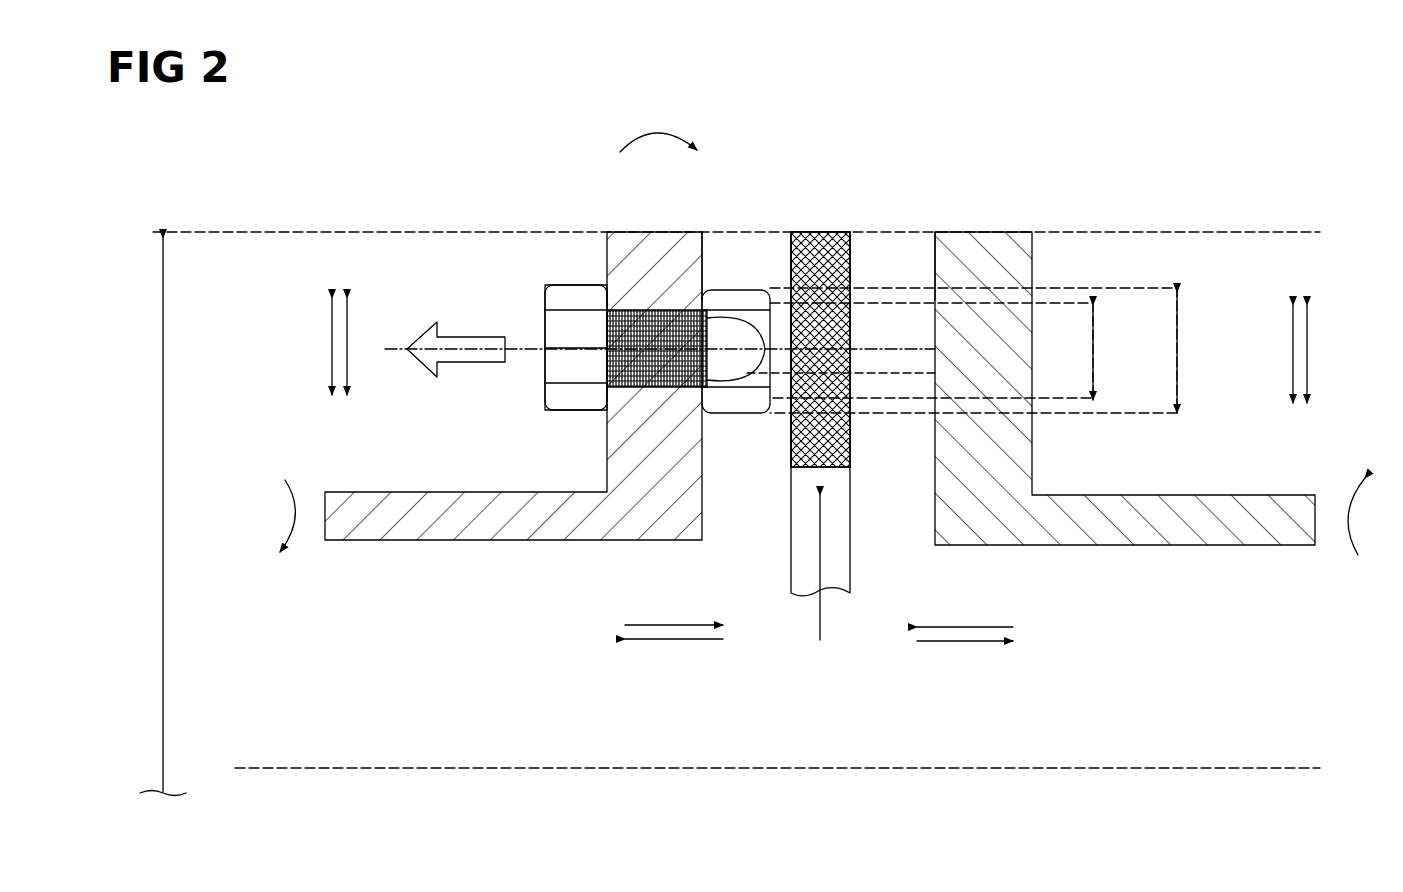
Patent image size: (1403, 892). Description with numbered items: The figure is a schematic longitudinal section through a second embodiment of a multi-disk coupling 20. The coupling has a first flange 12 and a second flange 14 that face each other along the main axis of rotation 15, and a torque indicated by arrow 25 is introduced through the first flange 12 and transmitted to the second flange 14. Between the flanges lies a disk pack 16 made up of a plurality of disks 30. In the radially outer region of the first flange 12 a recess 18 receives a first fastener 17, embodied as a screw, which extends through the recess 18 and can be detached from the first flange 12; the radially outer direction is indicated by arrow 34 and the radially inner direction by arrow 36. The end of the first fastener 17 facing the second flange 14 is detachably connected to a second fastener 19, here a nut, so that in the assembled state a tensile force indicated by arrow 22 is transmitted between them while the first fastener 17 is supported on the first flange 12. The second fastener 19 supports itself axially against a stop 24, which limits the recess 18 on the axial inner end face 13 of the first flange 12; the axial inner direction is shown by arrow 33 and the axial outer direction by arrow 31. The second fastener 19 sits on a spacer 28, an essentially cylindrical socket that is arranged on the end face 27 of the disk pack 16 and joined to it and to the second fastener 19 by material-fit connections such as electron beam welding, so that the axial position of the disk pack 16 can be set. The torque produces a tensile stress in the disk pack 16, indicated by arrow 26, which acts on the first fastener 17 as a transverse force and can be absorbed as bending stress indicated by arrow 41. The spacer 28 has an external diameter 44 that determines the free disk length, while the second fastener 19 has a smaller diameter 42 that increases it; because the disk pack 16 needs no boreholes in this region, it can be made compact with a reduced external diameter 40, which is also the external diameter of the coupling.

The first flange 12 is at (675, 245).
The axial inner end face 13 is at (706, 245).
The second flange 14 is at (978, 245).
The main axis of rotation 15 is at (256, 767).
The disk pack 16 is at (820, 226).
The first fastener 17 is at (627, 305).
The recess 18 is at (630, 392).
The second fastener 19 is at (747, 372).
The multi-disk coupling 20 is at (262, 190).
The arrow indicating tensile force 22 is at (470, 334).
The stop 24 is at (712, 308).
The arrow indicating torque 25 is at (292, 518).
The arrow indicating tensile stress 26 is at (822, 613).
The end face of the disk pack 27 is at (850, 257).
The spacer 28 is at (843, 425).
The disks 30 is at (840, 232).
The arrow indicating axial outer direction 31 is at (672, 645).
The arrow indicating axial inner direction 33 is at (668, 622).
The arrow indicating radial outer direction 34 is at (348, 378).
The arrow indicating radially inner direction 36 is at (331, 348).
The external diameter of the disk pack 40 is at (162, 517).
The arrow indicating bending stress 41 is at (655, 127).
The diameter of the second fastener 42 is at (1096, 350).
The external diameter of the spacer 44 is at (1180, 350).